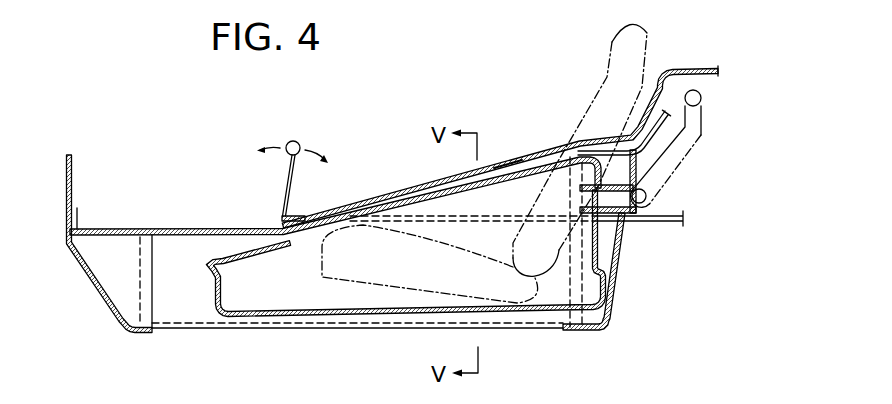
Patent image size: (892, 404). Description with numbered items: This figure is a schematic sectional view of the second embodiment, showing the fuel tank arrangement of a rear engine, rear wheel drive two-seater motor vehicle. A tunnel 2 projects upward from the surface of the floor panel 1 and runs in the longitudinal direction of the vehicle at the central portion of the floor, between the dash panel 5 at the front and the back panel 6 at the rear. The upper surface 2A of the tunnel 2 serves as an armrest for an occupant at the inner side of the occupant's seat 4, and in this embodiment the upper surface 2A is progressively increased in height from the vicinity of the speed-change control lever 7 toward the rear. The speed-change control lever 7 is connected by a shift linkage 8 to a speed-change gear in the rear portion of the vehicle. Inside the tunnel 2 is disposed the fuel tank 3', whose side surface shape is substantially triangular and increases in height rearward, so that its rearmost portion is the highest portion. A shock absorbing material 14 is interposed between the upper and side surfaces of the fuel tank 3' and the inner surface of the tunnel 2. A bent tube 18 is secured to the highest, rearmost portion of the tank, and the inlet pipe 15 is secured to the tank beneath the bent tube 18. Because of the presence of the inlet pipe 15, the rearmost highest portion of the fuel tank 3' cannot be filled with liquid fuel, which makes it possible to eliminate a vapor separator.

The floor panel 1 is at (343, 328).
The tunnel 2 is at (208, 227).
The upper surface of the tunnel 2A is at (403, 197).
The fuel tank 3' is at (585, 294).
The occupant's seat 4 is at (602, 88).
The dash panel 5 is at (72, 183).
The back panel 6 is at (697, 91).
The speed-change control lever 7 is at (293, 141).
The shift linkage 8 is at (296, 217).
The shock absorbing material 14 is at (508, 162).
The inlet pipe 15 is at (683, 163).
The bent tube 18 is at (672, 125).